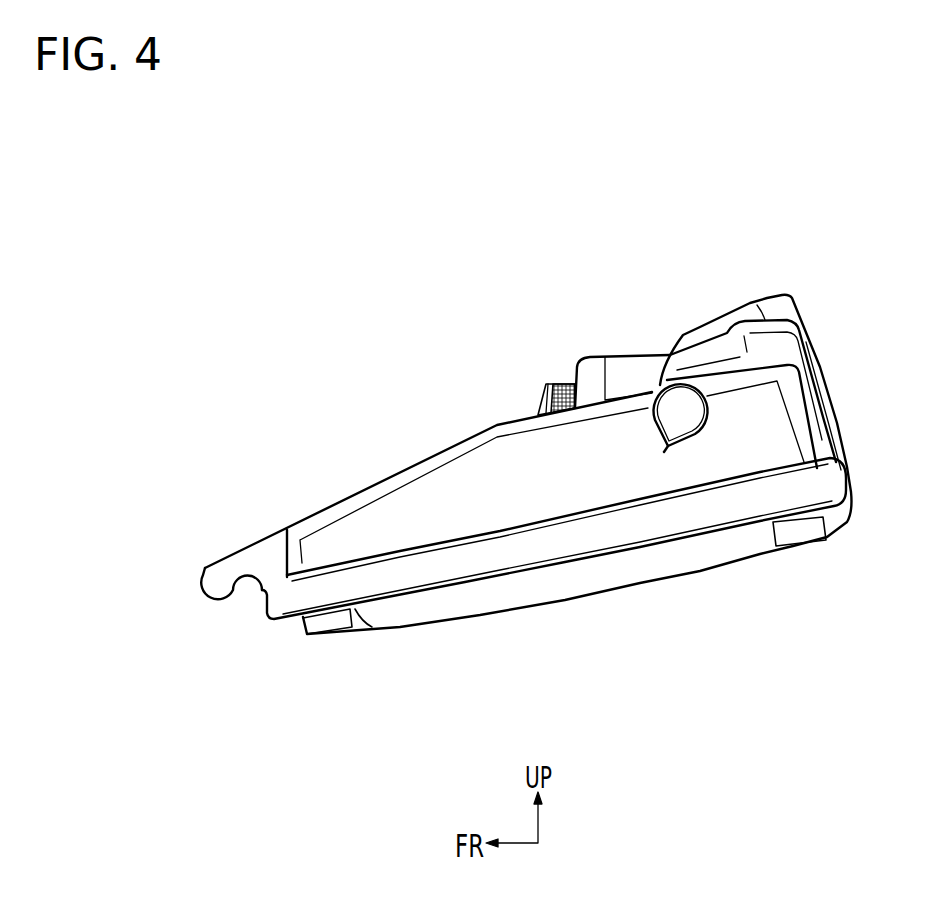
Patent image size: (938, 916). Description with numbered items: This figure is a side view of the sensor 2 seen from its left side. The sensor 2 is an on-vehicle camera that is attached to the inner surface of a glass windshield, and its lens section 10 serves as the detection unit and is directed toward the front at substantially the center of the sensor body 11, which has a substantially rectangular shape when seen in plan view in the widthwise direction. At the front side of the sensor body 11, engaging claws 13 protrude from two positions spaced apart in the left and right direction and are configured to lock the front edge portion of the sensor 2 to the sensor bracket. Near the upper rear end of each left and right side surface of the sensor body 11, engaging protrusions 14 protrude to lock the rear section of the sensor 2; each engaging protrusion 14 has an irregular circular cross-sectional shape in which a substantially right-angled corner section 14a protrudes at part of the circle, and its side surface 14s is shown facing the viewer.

The sensor 2 is at (682, 304).
The lens section 10 is at (537, 410).
The sensor body 11 is at (457, 498).
The engaging claws 13 is at (210, 582).
The engaging protrusions 14 is at (697, 420).
The corner sections 14a is at (667, 452).
The boss side surface 14s is at (683, 442).